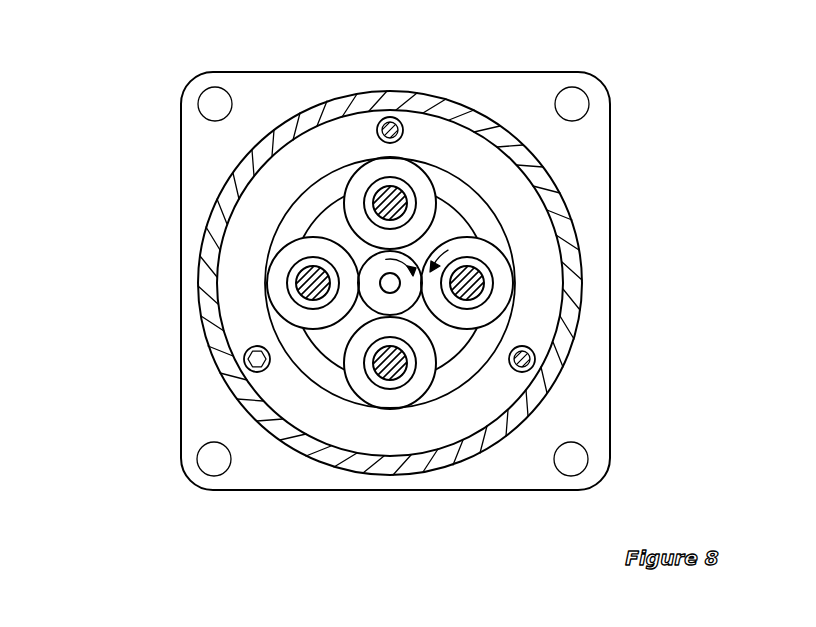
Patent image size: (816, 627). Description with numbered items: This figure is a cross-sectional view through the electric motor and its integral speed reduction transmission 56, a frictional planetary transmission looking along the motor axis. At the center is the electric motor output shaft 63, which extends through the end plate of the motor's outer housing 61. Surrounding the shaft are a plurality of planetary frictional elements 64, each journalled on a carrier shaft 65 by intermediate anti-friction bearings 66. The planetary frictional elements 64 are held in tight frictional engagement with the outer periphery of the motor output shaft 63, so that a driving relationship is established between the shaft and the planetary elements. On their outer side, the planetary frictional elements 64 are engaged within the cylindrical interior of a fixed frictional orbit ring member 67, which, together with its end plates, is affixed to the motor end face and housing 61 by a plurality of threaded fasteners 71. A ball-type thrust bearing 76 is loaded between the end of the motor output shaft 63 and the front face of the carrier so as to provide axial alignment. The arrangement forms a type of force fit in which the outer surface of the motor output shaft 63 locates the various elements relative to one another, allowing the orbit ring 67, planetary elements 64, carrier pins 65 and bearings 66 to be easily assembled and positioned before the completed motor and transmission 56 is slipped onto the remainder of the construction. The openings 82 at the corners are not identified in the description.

The transmission 56 is at (546, 264).
The outer housing 61 is at (177, 233).
The electric motor output shaft 63 is at (318, 222).
The planetary frictional elements 64 is at (432, 193).
The carrier shaft 65 is at (400, 195).
The anti-friction bearings 66 is at (367, 200).
The fixed frictional orbit ring member 67 is at (243, 325).
The threaded fasteners 71 is at (388, 115).
The ball-type thrust bearing 76 is at (385, 281).
The mounting holes 82 is at (212, 100).